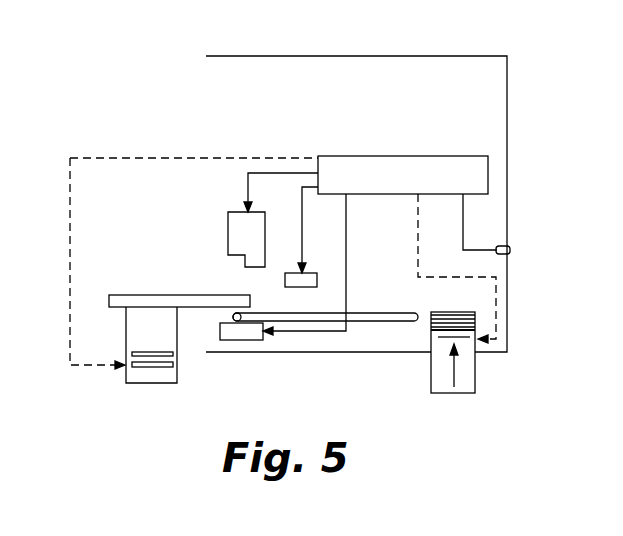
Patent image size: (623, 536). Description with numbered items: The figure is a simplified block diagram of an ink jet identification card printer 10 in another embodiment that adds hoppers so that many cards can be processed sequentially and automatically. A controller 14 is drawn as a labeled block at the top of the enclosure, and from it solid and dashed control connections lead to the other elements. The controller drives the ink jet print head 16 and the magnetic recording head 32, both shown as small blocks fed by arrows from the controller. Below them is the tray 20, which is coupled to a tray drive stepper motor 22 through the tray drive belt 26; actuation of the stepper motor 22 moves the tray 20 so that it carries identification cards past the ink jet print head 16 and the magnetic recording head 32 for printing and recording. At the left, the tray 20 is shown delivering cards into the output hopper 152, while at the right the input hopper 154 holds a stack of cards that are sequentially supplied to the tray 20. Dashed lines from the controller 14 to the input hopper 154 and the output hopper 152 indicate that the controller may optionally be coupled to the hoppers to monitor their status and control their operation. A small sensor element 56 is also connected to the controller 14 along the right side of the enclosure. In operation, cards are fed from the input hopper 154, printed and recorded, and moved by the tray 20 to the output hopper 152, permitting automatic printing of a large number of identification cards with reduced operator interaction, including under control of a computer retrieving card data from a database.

The ink jet identification card printer 10 is at (538, 102).
The controller 14 is at (411, 156).
The ink jet print head 16 is at (243, 225).
The tray 20 is at (142, 300).
The tray drive stepper motor 22 is at (246, 331).
The tray drive belt 26 is at (374, 310).
The magnetic recording head 32 is at (298, 287).
The sensor 56 is at (507, 246).
The output hopper 152 is at (122, 376).
The input hopper 154 is at (483, 368).